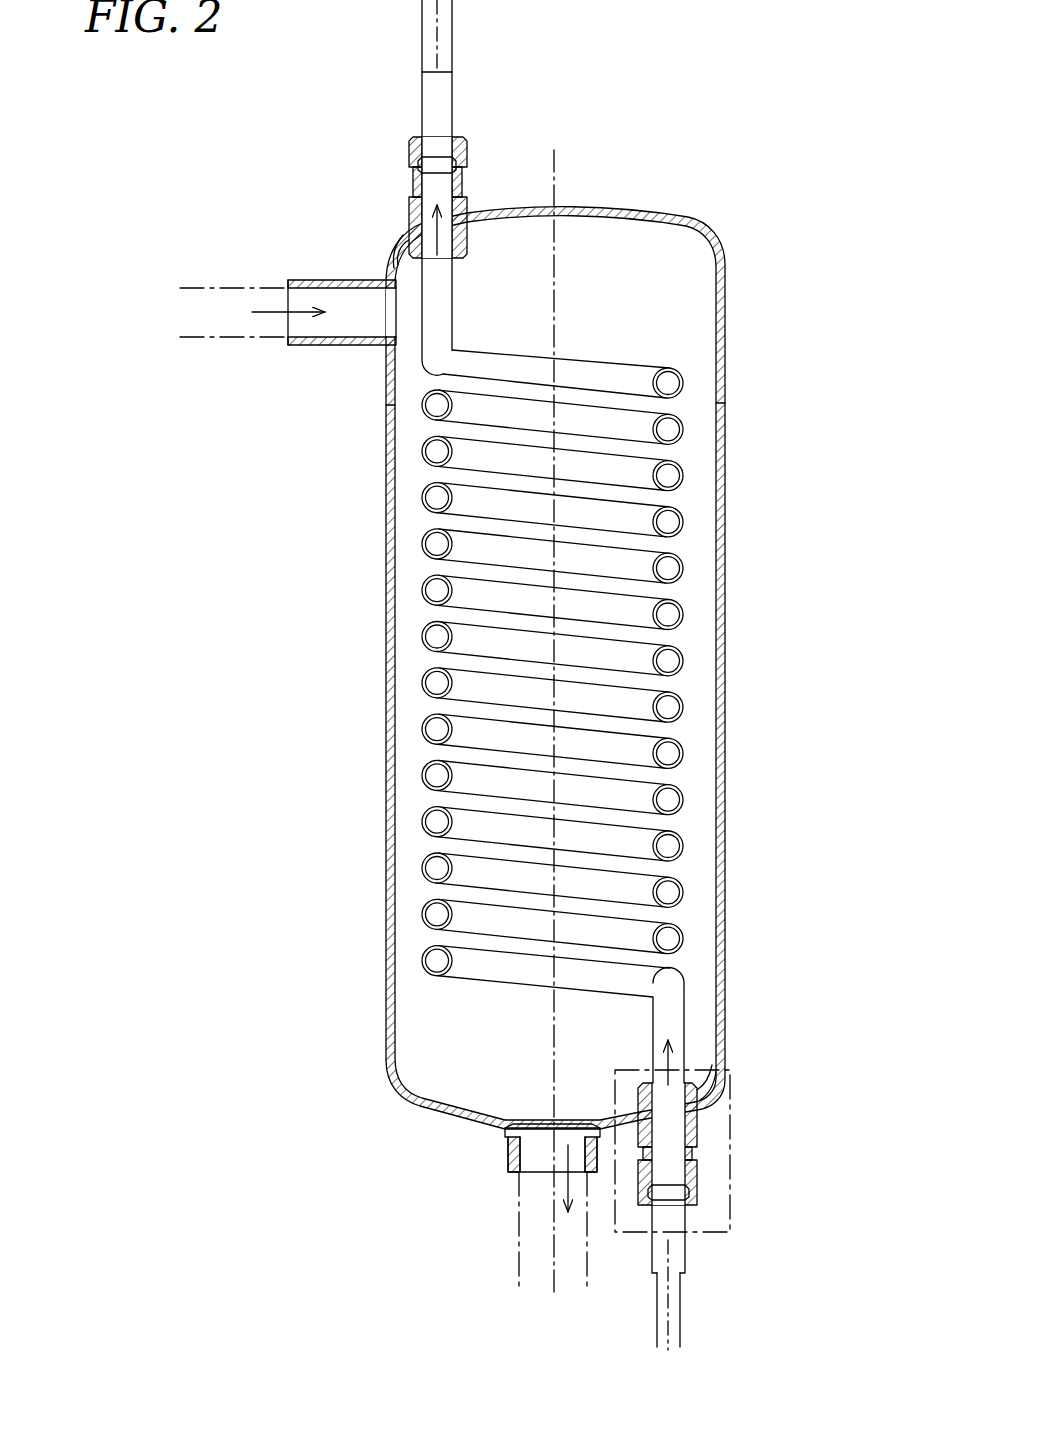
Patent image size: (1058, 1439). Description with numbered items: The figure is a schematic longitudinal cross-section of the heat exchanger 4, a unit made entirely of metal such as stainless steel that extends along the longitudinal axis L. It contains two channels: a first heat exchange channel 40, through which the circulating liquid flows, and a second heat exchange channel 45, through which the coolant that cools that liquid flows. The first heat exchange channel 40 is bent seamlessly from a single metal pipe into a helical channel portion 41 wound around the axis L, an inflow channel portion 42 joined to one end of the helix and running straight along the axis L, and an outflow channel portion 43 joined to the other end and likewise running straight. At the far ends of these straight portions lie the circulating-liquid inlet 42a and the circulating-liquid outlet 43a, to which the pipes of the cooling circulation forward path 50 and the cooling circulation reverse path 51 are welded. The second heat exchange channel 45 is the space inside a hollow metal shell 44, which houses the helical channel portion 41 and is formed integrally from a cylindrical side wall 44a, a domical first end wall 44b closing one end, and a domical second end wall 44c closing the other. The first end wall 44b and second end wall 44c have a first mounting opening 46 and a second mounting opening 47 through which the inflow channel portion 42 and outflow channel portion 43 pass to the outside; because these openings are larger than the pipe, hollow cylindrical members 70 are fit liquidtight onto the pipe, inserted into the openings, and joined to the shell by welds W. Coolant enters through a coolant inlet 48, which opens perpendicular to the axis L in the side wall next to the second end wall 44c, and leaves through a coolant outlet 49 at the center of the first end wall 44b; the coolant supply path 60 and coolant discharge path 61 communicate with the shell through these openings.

The heat exchanger 4 is at (762, 130).
The first heat exchange channel 40 is at (598, 325).
The helical channel portion 41 is at (590, 650).
The inflow channel portion 42 is at (668, 1222).
The circulating-liquid inlet 42a is at (668, 1262).
The outflow channel portion 43 is at (437, 115).
The circulating-liquid outlet 43a is at (437, 72).
The shell 44 is at (585, 667).
The cylindrical side wall 44a is at (725, 775).
The first end wall 44b is at (400, 1100).
The second end wall 44c is at (690, 215).
The second heat exchange channel 45 is at (582, 250).
The first mounting opening 46 is at (700, 1075).
The second mounting opening 47 is at (470, 232).
The coolant inlet 48 is at (350, 345).
The coolant outlet 49 is at (518, 1160).
The cooling circulation forward path 50 is at (668, 1305).
The cooling circulation reverse path 51 is at (440, 28).
The coolant supply path 60 is at (218, 320).
The coolant discharge path 61 is at (535, 1212).
The cylindrical member 70 is at (412, 182).
The weld W is at (410, 242).
The axis L is at (554, 744).